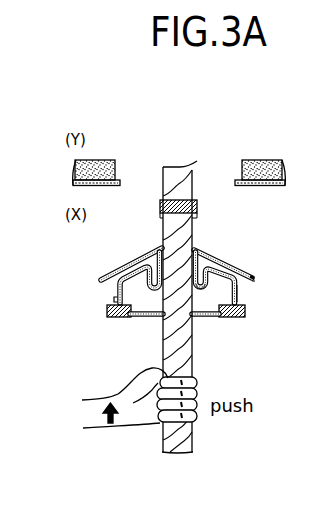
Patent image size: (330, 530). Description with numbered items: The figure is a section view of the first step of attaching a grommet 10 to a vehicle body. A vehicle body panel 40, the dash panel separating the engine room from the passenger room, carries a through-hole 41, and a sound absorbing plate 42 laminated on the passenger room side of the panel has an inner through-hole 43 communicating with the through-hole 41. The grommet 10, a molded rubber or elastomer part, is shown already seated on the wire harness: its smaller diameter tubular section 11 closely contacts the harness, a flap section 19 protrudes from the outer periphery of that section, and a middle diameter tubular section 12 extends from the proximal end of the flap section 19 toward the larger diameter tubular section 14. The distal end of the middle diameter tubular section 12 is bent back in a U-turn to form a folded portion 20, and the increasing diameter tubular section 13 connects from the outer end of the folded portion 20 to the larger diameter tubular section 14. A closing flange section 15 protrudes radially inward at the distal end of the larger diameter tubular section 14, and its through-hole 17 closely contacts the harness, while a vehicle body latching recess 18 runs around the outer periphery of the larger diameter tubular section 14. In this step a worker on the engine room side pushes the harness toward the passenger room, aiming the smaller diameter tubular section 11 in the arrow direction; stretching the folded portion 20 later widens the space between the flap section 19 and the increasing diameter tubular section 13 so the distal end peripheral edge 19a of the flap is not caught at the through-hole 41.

The grommet 10 is at (181, 285).
The smaller diameter tubular section 11 is at (162, 238).
The middle diameter tubular section 12 is at (197, 258).
The increasing diameter tubular section 13 is at (250, 271).
The larger diameter tubular section 14 is at (246, 318).
The closing flange section 15 is at (196, 317).
The through-hole 17 is at (162, 324).
The vehicle body latching recess 18 is at (242, 298).
The flap section 19 is at (200, 247).
The distal end peripheral edge 19a is at (257, 283).
The folded portion 20 is at (204, 290).
The vehicle body panel 40 is at (268, 185).
The through-hole 41 is at (233, 181).
The sound absorbing plate 42 is at (260, 162).
The inner through-hole 43 is at (121, 172).